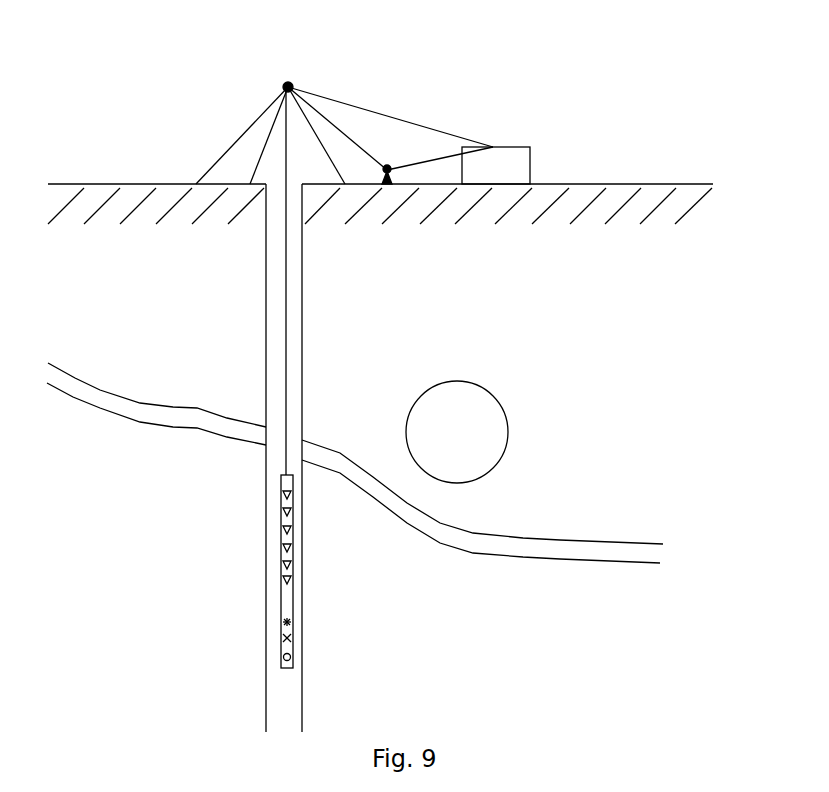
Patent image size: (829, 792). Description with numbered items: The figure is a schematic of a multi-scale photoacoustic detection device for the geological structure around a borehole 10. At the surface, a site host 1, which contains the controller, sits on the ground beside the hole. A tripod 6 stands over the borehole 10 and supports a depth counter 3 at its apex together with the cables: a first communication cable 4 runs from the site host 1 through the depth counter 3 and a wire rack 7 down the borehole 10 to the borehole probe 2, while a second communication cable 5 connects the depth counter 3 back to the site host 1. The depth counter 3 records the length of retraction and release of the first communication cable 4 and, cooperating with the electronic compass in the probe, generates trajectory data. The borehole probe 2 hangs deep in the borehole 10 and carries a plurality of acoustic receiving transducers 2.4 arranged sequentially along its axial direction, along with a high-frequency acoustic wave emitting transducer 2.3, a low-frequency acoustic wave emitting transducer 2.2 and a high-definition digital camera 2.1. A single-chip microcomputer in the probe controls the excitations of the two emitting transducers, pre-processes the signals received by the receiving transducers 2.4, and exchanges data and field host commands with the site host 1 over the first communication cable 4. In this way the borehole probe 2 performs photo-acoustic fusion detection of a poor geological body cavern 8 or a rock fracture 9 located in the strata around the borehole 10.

The site host 1 is at (507, 158).
The borehole probe 2 is at (283, 592).
The high-definition digital camera 2.1 is at (282, 657).
The low-frequency acoustic wave emitting transducer 2.2 is at (291, 638).
The high-frequency acoustic wave emitting transducer 2.3 is at (291, 622).
The acoustic receiving transducers 2.4 is at (289, 547).
The depth counter 3 is at (277, 84).
The first communication cable 4 is at (428, 165).
The second communication cable 5 is at (380, 112).
The tripod 6 is at (222, 147).
The wire rack 7 is at (383, 182).
The poor geological body cavern 8 is at (490, 425).
The rock fracture 9 is at (578, 543).
The borehole 10 is at (273, 352).